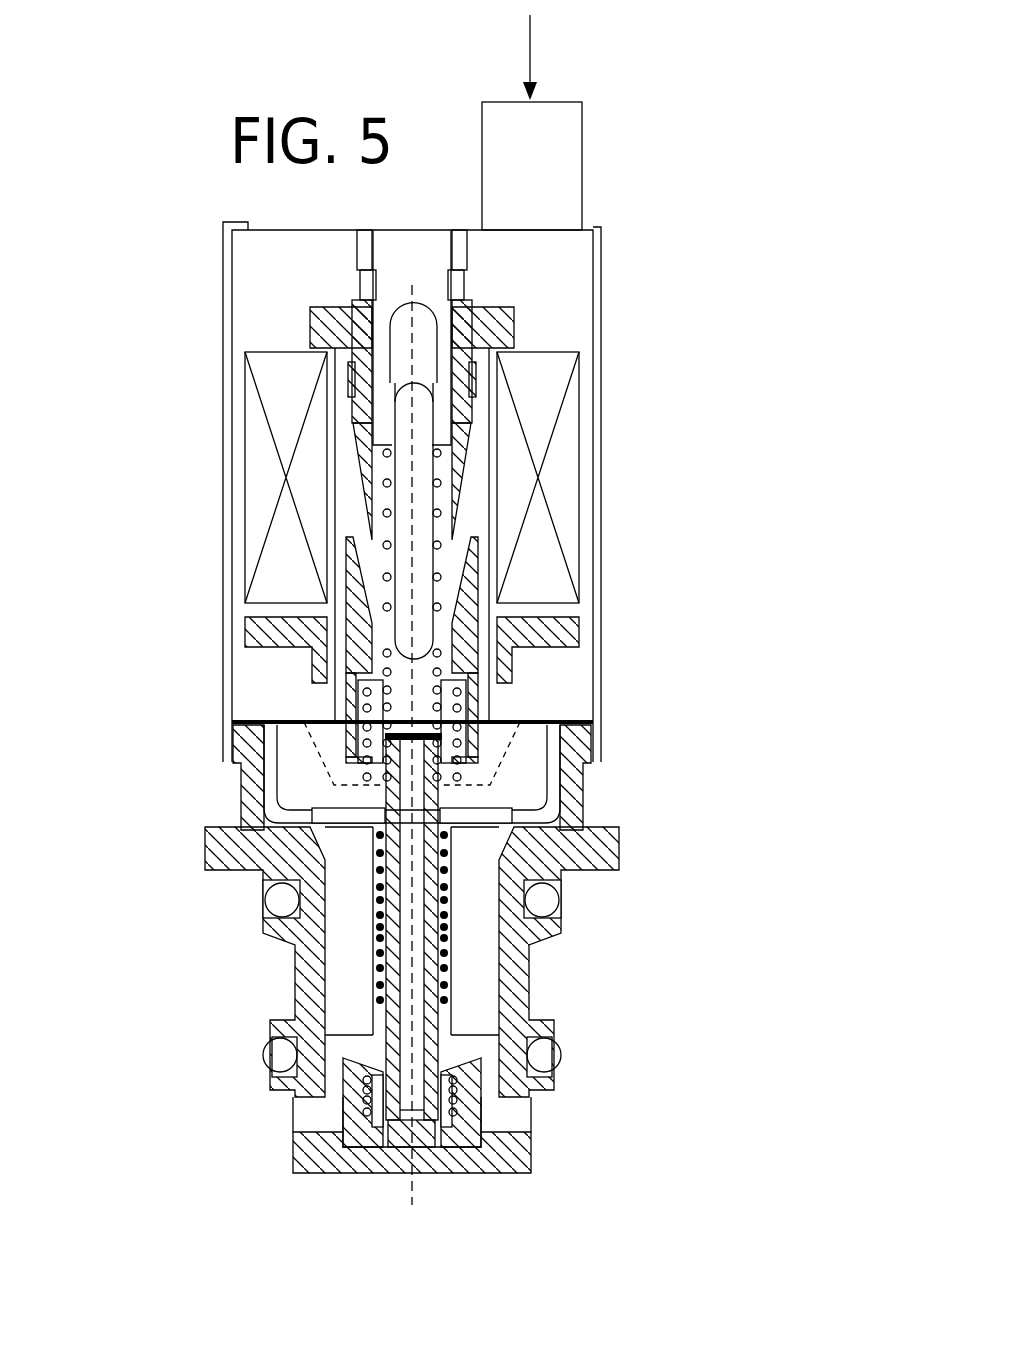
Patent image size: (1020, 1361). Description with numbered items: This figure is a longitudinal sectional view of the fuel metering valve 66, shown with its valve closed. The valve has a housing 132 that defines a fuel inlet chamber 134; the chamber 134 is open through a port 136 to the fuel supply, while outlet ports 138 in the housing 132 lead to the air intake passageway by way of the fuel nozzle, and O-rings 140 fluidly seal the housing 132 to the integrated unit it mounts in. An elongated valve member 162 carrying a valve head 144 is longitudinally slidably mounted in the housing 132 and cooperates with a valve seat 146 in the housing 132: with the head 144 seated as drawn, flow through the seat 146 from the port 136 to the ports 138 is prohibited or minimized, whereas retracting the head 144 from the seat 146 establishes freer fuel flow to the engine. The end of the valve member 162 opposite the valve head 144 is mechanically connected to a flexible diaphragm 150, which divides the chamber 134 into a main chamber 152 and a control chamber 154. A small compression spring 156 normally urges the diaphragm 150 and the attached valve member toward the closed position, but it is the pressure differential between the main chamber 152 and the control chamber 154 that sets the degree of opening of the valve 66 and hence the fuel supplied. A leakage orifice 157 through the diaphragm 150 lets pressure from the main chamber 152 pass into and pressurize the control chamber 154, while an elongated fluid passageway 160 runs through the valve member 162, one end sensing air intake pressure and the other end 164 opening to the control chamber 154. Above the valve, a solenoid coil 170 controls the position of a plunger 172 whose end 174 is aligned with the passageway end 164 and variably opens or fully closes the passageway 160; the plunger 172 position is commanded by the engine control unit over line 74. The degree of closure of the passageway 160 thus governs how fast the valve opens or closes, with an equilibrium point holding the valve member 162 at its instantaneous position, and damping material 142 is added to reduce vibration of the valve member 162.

The fuel metering valve 66 is at (602, 268).
The line 74 is at (530, 48).
The housing 132 is at (577, 805).
The fuel inlet chamber 134 is at (475, 890).
The port 136 is at (307, 978).
The outlet ports 138 is at (303, 1123).
The O-rings 140 is at (553, 1050).
The valve member 142 is at (380, 963).
The valve head 144 is at (462, 1045).
The valve seat 146 is at (355, 1077).
The flexible diaphragm 150 is at (245, 758).
The main chamber 152 is at (345, 918).
The control chamber 154 is at (282, 726).
The compression spring 156 is at (442, 775).
The leakage orifice 157 is at (327, 818).
The fluid passageway 160 is at (525, 1153).
The valve member 162 is at (397, 1110).
The end of the passageway 164 is at (417, 752).
The solenoid coil 170 is at (547, 422).
The plunger 172 is at (387, 483).
The end of the plunger 174 is at (387, 652).